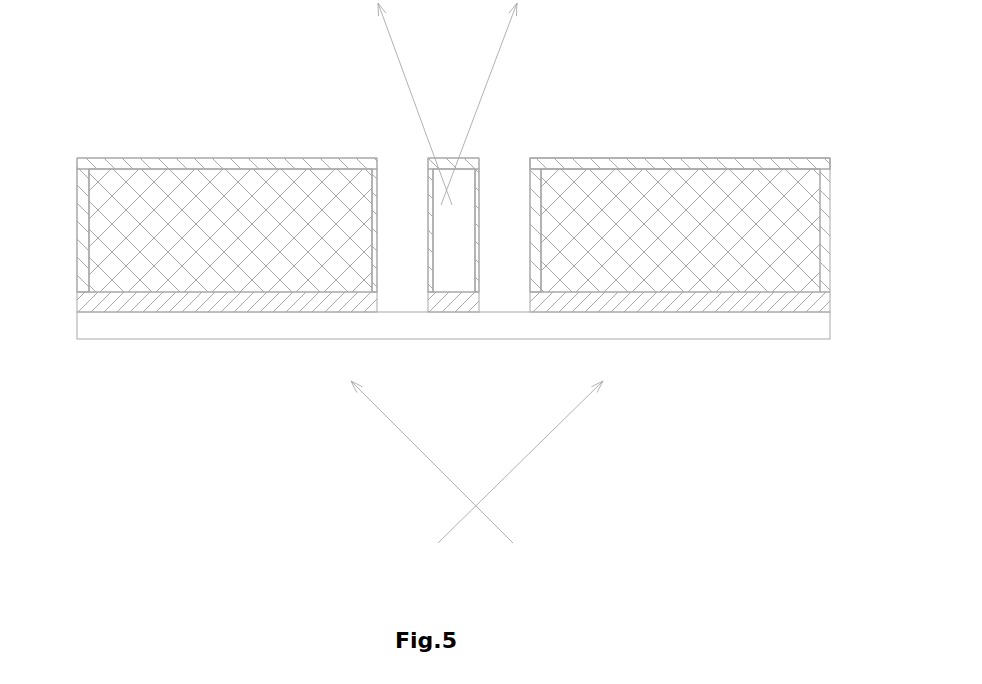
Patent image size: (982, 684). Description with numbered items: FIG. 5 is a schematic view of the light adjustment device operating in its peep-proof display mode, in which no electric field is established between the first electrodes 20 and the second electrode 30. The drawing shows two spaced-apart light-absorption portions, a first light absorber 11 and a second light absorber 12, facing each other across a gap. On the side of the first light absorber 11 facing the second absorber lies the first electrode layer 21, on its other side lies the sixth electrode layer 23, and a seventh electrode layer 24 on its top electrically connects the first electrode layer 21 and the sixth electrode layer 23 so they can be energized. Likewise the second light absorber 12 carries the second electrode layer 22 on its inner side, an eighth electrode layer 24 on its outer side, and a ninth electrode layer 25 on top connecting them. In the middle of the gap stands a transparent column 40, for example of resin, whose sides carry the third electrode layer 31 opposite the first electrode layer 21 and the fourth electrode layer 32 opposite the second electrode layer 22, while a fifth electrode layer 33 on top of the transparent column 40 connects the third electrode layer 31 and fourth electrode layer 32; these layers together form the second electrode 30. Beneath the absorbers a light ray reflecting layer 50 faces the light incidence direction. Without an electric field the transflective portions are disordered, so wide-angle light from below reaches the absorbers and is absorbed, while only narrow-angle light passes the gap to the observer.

The first light absorber 11 is at (186, 215).
The second light absorber 12 is at (695, 222).
The first electrode 20 is at (377, 235).
The first electrode layer 21 is at (374, 278).
The second electrode layer 22 is at (537, 262).
The sixth electrode layer 23 is at (83, 217).
The seventh electrode layer 24 is at (142, 162).
The ninth electrode layer 25 is at (668, 163).
The second electrode 30 is at (478, 278).
The third electrode layer 31 is at (432, 228).
The fourth electrode layer 32 is at (480, 217).
The fifth electrode layer 33 is at (448, 163).
The transparent column 40 is at (455, 247).
The light ray reflecting layer 50 is at (186, 300).